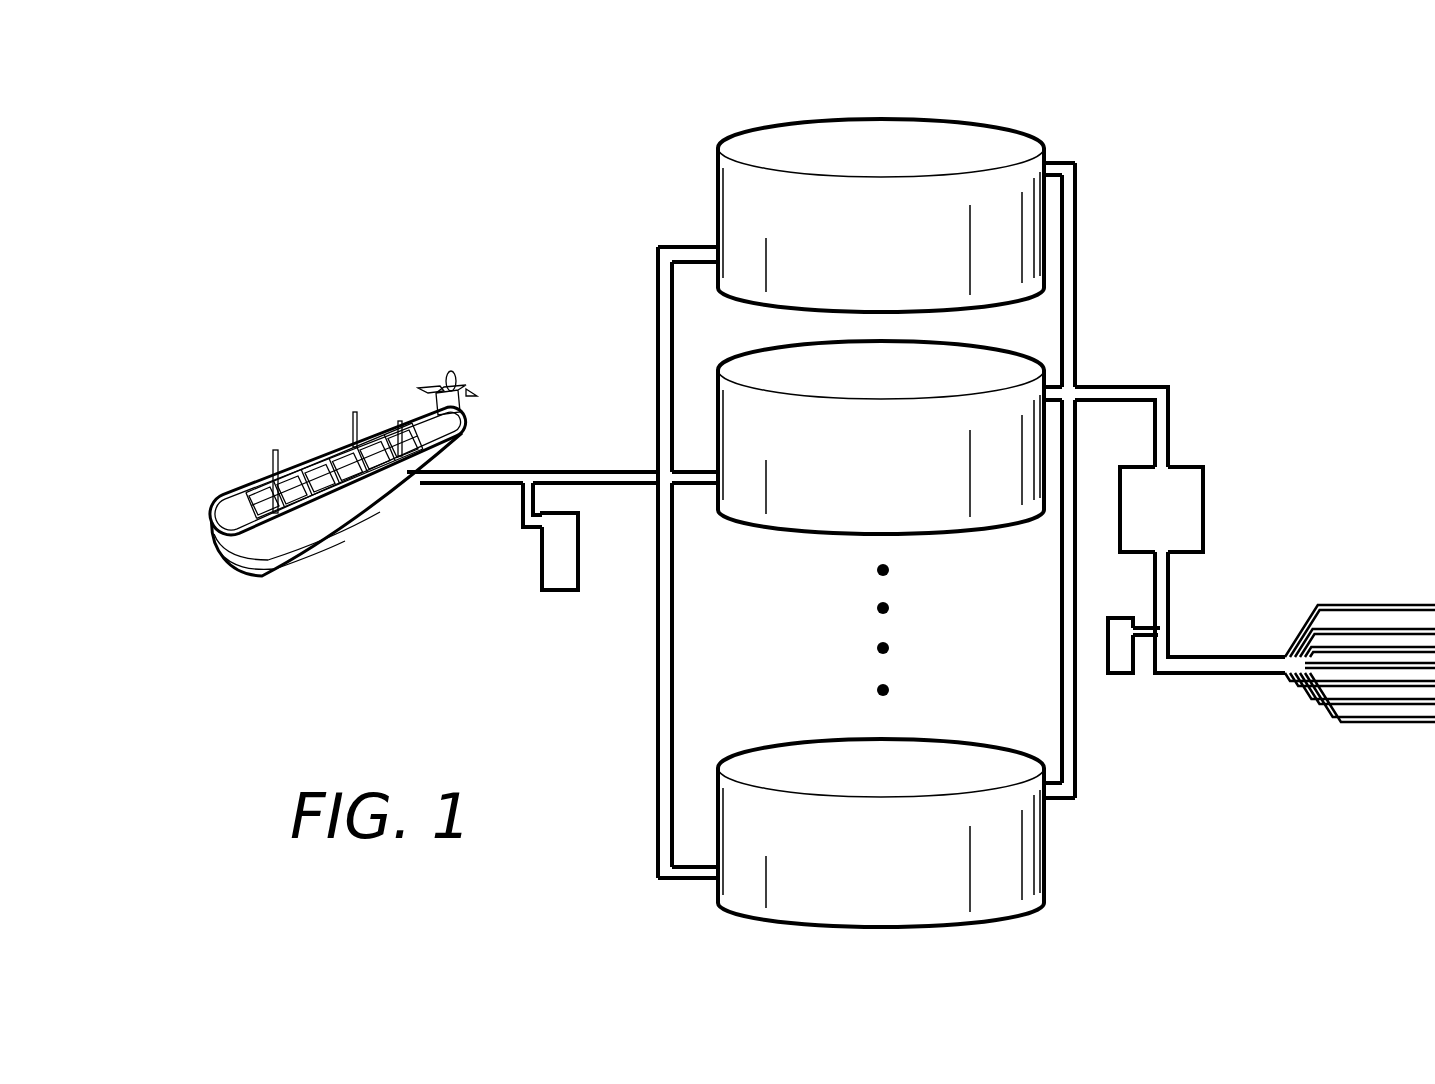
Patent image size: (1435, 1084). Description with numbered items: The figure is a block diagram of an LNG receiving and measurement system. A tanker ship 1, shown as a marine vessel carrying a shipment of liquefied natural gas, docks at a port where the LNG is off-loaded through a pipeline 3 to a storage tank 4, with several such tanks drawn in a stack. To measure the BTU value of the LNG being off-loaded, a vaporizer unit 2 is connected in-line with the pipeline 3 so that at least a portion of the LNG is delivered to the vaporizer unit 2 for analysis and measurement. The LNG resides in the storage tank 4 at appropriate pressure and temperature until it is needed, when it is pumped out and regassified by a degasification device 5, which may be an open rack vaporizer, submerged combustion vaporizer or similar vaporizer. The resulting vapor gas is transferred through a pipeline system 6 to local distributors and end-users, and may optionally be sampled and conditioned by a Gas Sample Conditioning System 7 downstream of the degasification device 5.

The tanker ship 1 is at (222, 543).
The vaporizer unit 2 is at (548, 569).
The pipeline 3 is at (610, 480).
The storage tank 4 is at (898, 253).
The degasification device 5 is at (1178, 503).
The pipeline system 6 is at (1362, 605).
The Gas Sample Conditioning System 7 is at (1122, 655).